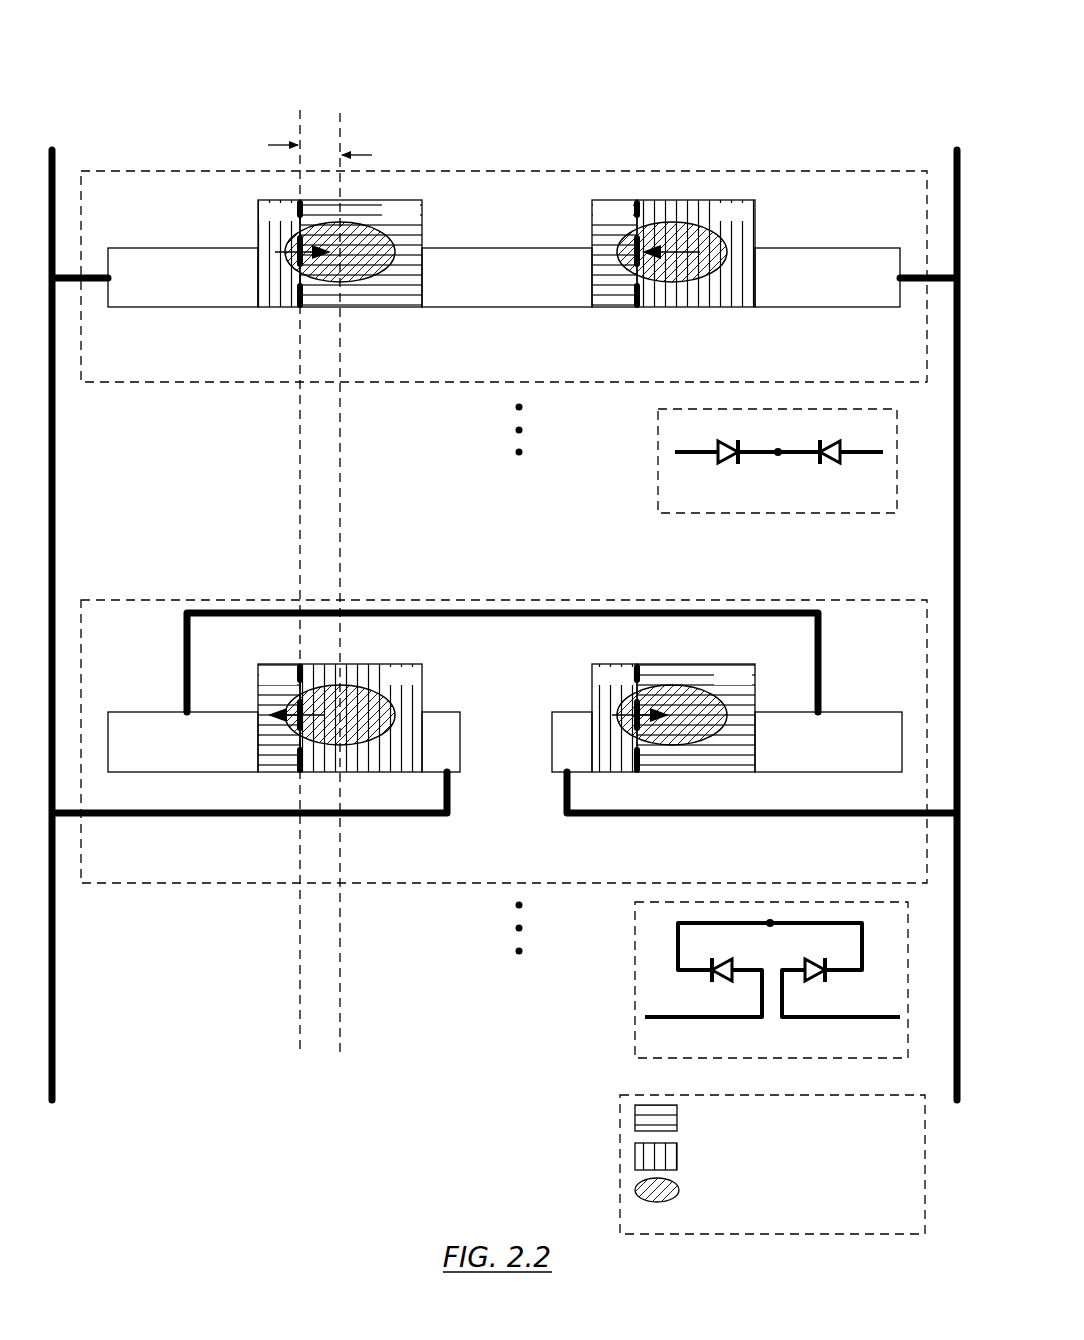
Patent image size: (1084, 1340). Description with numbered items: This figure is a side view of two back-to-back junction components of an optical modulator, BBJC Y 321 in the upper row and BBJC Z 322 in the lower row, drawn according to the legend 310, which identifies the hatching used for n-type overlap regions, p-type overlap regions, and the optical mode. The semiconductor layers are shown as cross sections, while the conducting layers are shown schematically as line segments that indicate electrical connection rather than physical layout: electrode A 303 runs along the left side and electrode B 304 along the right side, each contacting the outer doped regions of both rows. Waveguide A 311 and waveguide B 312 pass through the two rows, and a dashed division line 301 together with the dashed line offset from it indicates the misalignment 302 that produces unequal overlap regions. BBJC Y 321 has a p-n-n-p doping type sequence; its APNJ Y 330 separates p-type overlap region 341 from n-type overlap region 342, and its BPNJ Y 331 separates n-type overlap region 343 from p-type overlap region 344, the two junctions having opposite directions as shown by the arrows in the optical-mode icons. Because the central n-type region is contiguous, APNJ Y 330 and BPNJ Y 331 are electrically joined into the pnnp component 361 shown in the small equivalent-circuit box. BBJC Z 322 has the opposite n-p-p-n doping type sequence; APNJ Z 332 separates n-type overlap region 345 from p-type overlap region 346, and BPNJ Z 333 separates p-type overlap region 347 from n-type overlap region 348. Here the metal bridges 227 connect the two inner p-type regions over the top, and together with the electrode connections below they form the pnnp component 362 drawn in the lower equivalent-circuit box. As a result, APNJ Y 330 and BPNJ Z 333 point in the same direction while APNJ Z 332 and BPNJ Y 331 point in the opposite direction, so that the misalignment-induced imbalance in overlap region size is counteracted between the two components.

The division line 301 is at (342, 122).
The misalignment 302 is at (320, 136).
The electrode A 303 is at (64, 194).
The electrode B 304 is at (949, 152).
The legend 310 is at (875, 1225).
The waveguide A 311 is at (388, 175).
The waveguide B 312 is at (655, 175).
The BBJC Y 321 is at (504, 212).
The BBJC Z 322 is at (504, 741).
The metal bridges 227 is at (472, 620).
The APNJ Y 330 is at (294, 313).
The BPNJ Y 331 is at (645, 313).
The APNJ Z 332 is at (296, 777).
The BPNJ Z 333 is at (645, 777).
The p-type overlap region 341 is at (296, 221).
The n-type overlap region 342 is at (384, 221).
The n-type overlap region 343 is at (630, 221).
The p-type overlap region 344 is at (716, 221).
The n-type overlap region 345 is at (296, 685).
The p-type overlap region 346 is at (384, 685).
The p-type overlap region 347 is at (630, 685).
The n-type overlap region 348 is at (716, 685).
The pnnp component 361 is at (760, 502).
The pnnp component 362 is at (752, 1047).